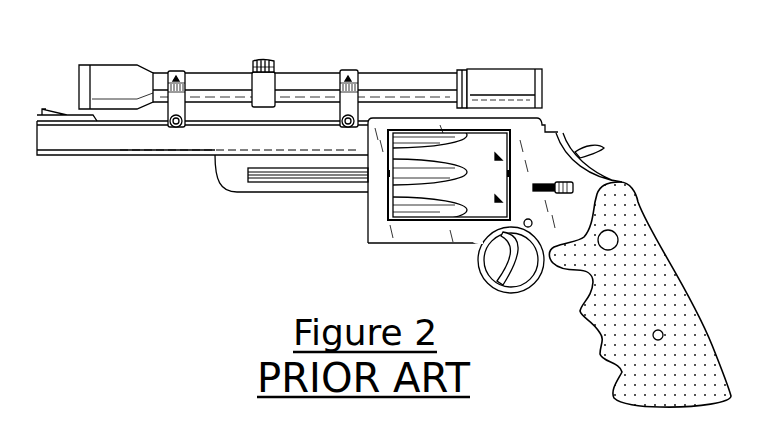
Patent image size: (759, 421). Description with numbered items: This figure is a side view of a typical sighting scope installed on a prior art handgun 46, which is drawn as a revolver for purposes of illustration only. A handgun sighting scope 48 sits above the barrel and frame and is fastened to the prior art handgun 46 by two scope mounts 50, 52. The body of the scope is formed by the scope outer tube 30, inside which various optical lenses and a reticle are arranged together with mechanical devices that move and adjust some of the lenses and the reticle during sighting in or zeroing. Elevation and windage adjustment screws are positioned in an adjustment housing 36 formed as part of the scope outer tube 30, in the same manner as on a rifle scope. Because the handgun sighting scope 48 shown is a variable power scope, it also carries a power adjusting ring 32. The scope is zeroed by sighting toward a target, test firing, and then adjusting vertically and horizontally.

The scope outer tube 30 is at (312, 85).
The power adjusting ring 32 is at (463, 82).
The adjustment housing 36 is at (272, 77).
The prior art handgun 46 is at (624, 181).
The handgun sighting scope 48 is at (521, 69).
The scope mount 50 is at (178, 72).
The scope mount 52 is at (348, 74).